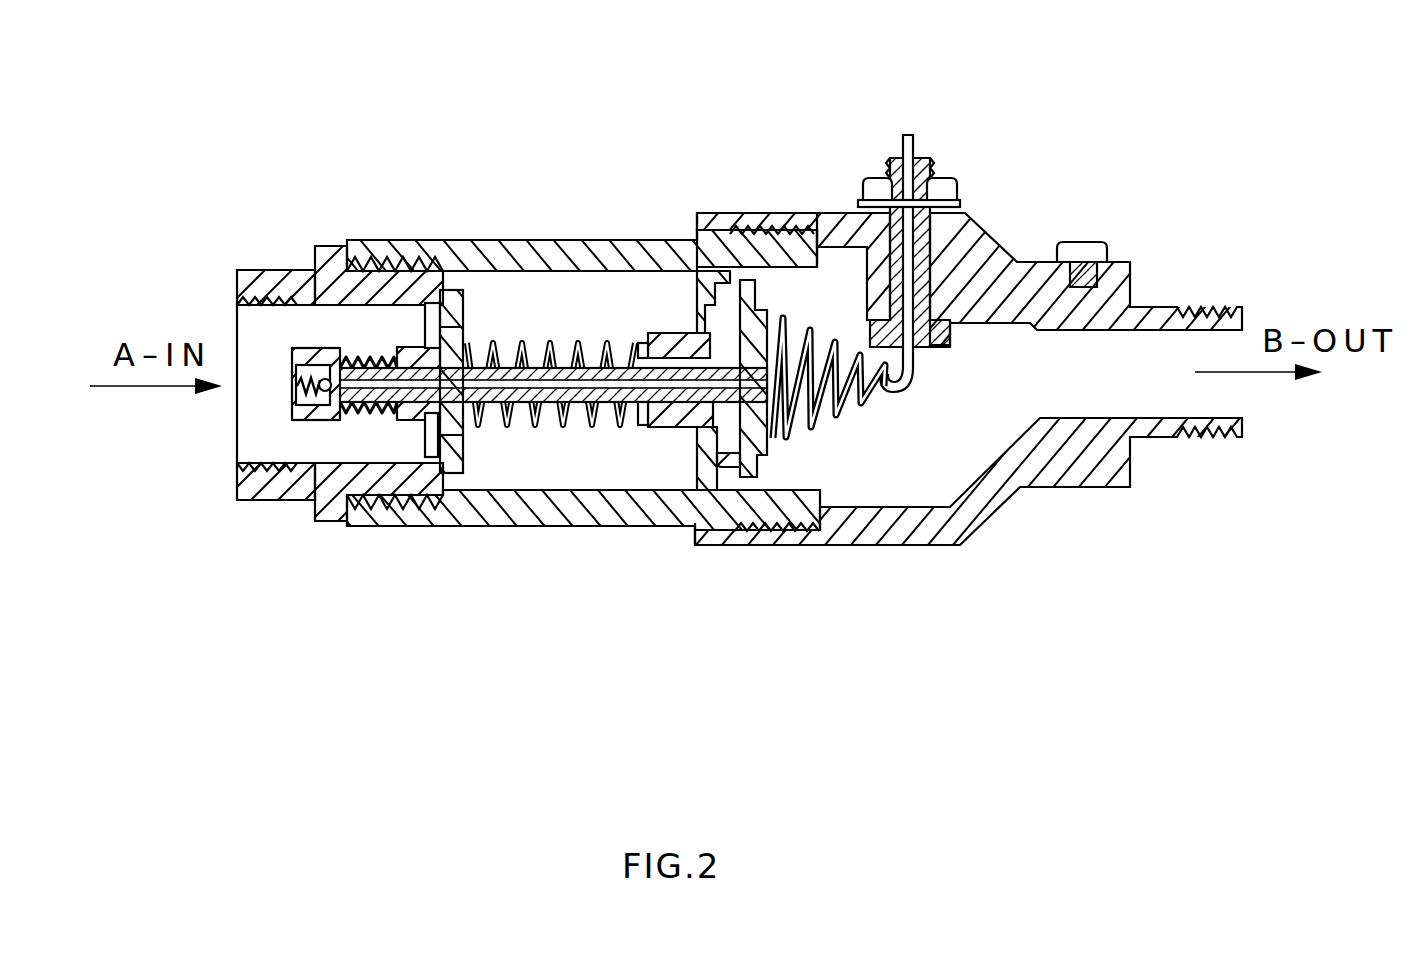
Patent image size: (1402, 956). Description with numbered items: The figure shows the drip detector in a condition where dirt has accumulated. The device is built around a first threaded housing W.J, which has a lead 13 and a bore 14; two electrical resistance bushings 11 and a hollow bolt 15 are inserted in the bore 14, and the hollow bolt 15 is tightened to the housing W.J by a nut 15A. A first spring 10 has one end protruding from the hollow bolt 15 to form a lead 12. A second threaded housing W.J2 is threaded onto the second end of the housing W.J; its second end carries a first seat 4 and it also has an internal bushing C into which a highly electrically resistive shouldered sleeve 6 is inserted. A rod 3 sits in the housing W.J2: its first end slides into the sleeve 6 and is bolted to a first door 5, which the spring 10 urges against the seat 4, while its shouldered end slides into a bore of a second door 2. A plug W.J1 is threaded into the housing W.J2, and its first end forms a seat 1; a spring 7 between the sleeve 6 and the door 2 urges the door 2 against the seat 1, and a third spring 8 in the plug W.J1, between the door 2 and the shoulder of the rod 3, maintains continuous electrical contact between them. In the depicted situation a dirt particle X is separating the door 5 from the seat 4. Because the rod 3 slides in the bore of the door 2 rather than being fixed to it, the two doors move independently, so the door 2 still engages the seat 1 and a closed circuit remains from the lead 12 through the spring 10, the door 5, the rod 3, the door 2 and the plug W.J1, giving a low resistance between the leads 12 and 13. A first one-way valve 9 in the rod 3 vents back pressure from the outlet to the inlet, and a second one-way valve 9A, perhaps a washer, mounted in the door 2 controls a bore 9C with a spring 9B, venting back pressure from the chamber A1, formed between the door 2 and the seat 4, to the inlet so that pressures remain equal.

The seat 1 is at (433, 492).
The second door 2 is at (452, 488).
The rod 3 is at (525, 405).
The first seat 4 is at (737, 463).
The first door 5 is at (760, 485).
The shouldered sleeve 6 is at (640, 430).
The spring 7 is at (593, 427).
The third spring 8 is at (382, 415).
The first one-way valve 9 is at (315, 410).
The second one-way valve 9A is at (440, 325).
The spring 9B is at (417, 337).
The bore 9C is at (450, 300).
The first spring 10 is at (843, 425).
The electrical resistance bushings 11 is at (937, 235).
The lead 12 is at (915, 135).
The lead 13 is at (1115, 262).
The bore 14 is at (876, 237).
The hollow bolt 15 is at (885, 158).
The nut 15A is at (958, 178).
The internal bushing C is at (663, 330).
The dirt particle X is at (738, 462).
The chamber A1 is at (559, 449).
The first threaded housing W.J is at (1110, 492).
The plug W.J1 is at (250, 268).
The second threaded housing W.J2 is at (708, 226).